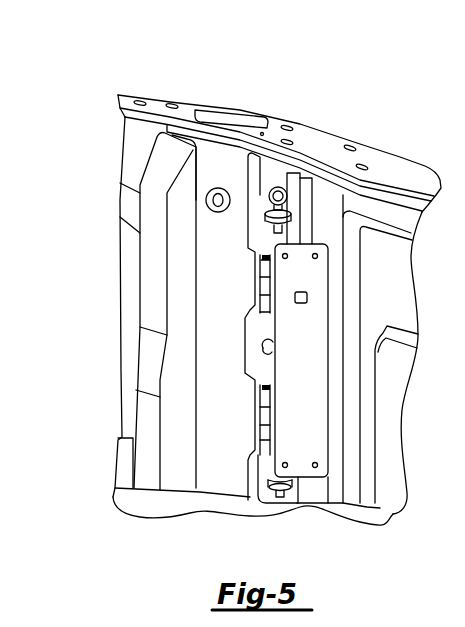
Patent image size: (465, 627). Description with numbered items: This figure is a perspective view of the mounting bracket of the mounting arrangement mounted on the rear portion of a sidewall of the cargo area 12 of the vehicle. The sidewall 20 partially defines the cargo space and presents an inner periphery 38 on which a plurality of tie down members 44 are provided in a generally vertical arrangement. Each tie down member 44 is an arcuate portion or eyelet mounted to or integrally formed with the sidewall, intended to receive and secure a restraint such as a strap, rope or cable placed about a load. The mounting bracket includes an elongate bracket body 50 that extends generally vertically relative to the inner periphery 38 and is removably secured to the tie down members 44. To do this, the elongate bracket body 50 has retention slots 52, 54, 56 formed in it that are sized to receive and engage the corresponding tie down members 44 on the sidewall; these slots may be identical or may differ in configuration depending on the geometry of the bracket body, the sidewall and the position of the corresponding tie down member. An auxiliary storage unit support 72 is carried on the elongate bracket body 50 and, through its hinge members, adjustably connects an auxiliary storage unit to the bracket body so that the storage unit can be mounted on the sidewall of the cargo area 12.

The cargo area 12 is at (153, 76).
The first sidewall 20 is at (318, 137).
The inner periphery 38 is at (138, 153).
The tie down member 44 is at (292, 215).
The elongate bracket body 50 is at (273, 175).
The retention slot 52 is at (268, 221).
The retention slot 54 is at (263, 345).
The retention slot 56 is at (268, 478).
The auxiliary storage unit support 72 is at (318, 256).